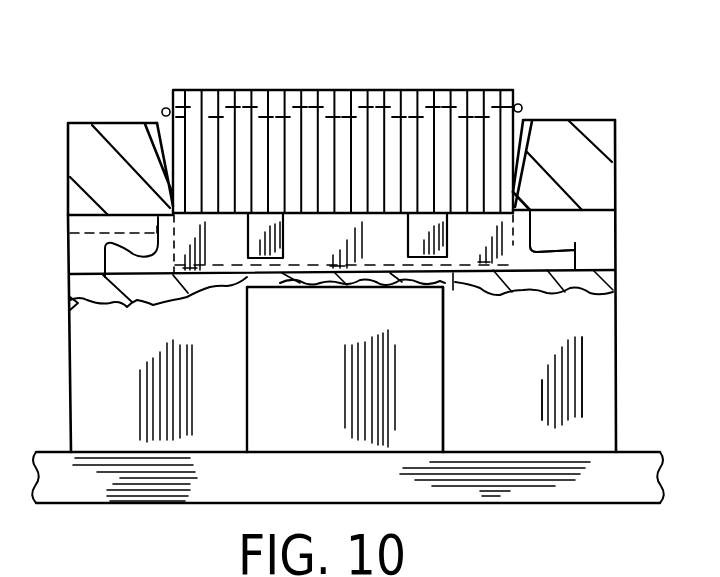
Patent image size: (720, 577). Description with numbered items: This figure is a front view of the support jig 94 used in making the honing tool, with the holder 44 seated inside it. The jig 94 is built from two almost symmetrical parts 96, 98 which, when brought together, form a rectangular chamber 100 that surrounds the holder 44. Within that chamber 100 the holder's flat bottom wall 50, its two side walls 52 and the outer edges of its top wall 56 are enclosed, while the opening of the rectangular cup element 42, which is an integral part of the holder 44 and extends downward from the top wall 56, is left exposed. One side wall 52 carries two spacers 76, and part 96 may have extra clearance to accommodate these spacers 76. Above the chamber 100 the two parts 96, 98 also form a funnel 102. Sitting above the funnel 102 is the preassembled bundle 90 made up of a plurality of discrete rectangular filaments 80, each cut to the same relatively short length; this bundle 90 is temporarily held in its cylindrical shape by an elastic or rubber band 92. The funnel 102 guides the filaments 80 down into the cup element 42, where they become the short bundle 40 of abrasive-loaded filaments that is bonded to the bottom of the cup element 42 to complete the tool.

The bundle 40 is at (378, 90).
The cup element 42 is at (68, 236).
The holder 44 is at (540, 228).
The bottom wall 50 is at (212, 278).
The side walls 52 is at (462, 238).
The top wall 56 is at (527, 203).
The spacers 76 is at (258, 258).
The filaments 80 is at (260, 132).
The bundle 90 is at (479, 81).
The rubber band 92 is at (522, 107).
The jig 94 is at (592, 416).
The part 96 is at (598, 366).
The part 98 is at (598, 366).
The chamber 100 is at (590, 233).
The funnel 102 is at (163, 123).